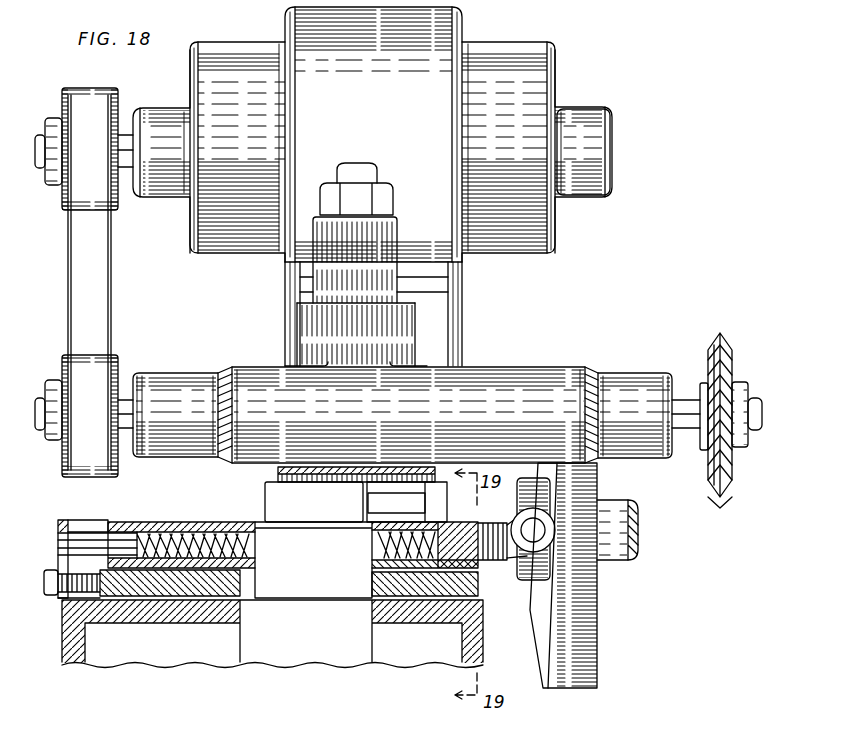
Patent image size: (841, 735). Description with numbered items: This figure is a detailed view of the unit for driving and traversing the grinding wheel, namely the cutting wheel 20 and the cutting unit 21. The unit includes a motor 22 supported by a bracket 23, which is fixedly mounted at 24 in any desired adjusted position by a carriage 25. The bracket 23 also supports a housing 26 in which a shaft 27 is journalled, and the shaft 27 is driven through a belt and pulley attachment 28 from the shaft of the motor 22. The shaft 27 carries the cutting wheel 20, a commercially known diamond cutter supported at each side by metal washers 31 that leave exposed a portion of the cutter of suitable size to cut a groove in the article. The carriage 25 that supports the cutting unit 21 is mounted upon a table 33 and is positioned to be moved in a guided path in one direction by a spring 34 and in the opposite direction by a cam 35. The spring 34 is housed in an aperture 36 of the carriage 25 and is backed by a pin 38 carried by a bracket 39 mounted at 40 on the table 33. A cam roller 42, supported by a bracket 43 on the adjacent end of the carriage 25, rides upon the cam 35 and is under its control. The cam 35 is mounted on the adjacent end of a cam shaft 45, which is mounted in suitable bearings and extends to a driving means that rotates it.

The cutting wheel 20 is at (722, 347).
The cutting unit 21 is at (622, 112).
The motor 22 is at (447, 40).
The bracket 23 is at (452, 316).
The mounting 24 is at (380, 502).
The carriage 25 is at (232, 531).
The housing 26 is at (527, 378).
The shaft 27 is at (688, 402).
The belt and pulley attachment 28 is at (95, 290).
The metal washers 31 is at (708, 490).
The table 33 is at (182, 585).
The spring 34 is at (190, 531).
The cam 35 is at (585, 648).
The aperture 36 is at (125, 540).
The pin 38 is at (90, 535).
The bracket 39 is at (60, 562).
The mounting 40 is at (50, 592).
The cam roller 42 is at (520, 518).
The bracket 43 is at (510, 556).
The cam shaft 45 is at (615, 545).